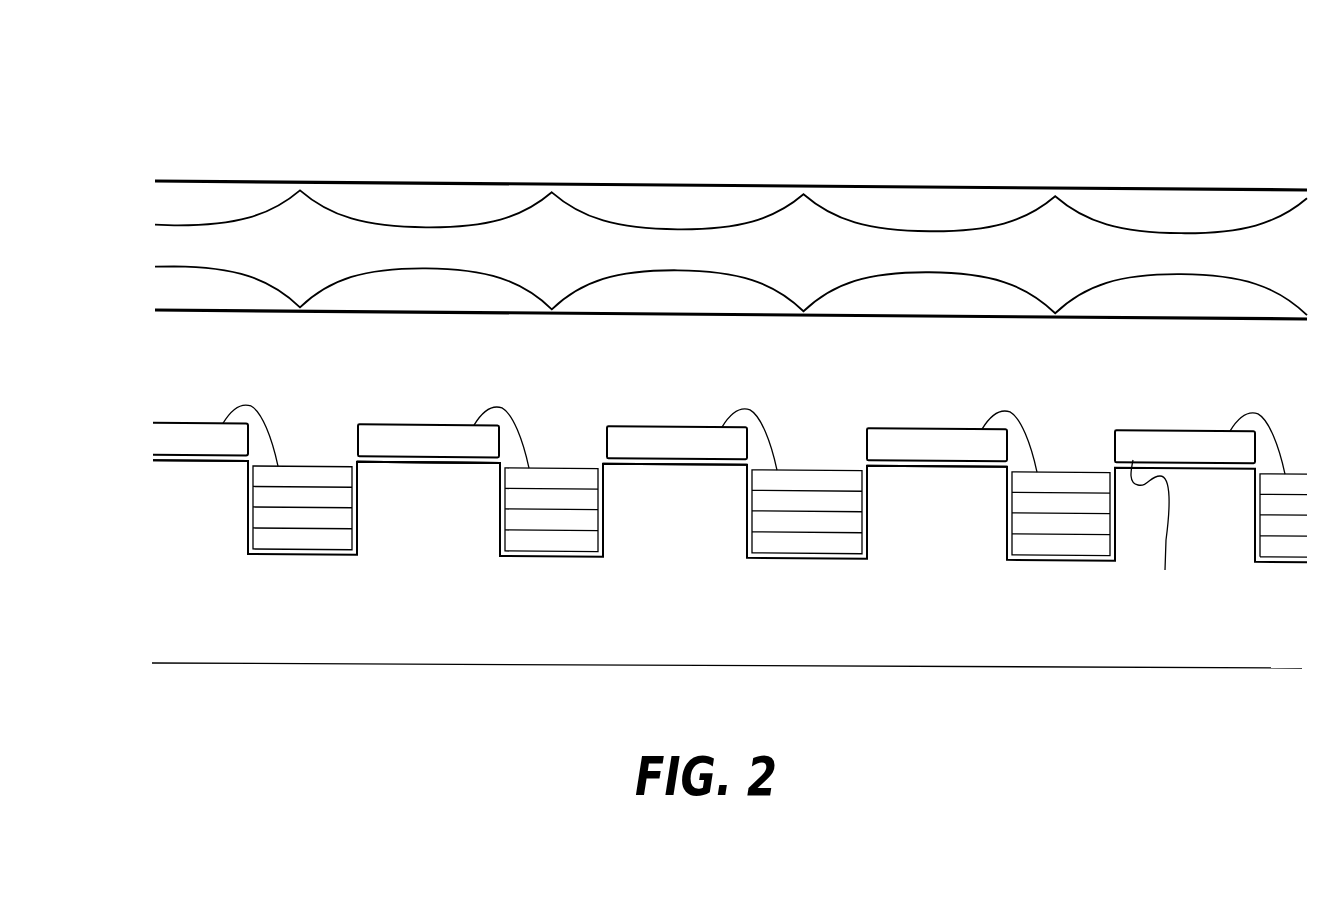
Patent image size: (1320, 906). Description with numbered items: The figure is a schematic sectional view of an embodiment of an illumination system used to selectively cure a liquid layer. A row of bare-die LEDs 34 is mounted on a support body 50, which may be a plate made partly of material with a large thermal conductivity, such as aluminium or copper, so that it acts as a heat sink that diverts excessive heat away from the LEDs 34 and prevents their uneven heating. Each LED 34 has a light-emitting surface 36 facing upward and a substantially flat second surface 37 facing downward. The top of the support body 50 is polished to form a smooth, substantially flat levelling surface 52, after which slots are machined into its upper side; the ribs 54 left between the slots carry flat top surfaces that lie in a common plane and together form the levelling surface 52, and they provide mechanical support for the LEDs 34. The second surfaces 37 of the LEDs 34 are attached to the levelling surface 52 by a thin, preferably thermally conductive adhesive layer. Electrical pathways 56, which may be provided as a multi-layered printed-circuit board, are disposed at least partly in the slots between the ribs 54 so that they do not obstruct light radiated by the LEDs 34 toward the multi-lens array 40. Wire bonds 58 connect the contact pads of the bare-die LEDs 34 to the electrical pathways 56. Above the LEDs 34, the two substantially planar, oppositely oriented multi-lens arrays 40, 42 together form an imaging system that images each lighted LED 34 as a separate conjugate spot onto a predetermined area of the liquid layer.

The LEDs 34 is at (385, 438).
The light-emitting surface 36 is at (1131, 429).
The second surface 37 is at (1165, 570).
The multi-lens array 40 is at (146, 287).
The multi-lens array 42 is at (146, 198).
The support body 50 is at (684, 641).
The levelling surface 52 is at (387, 463).
The ribs 54 is at (404, 523).
The electrical pathways 56 is at (813, 478).
The wire bonds 58 is at (492, 410).